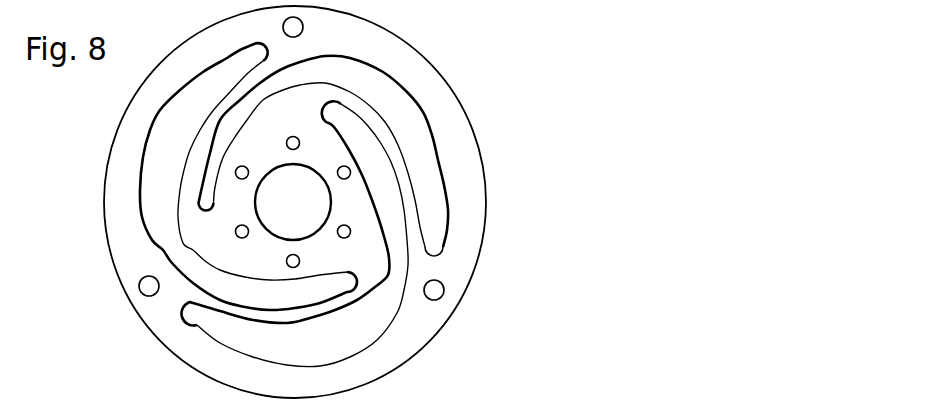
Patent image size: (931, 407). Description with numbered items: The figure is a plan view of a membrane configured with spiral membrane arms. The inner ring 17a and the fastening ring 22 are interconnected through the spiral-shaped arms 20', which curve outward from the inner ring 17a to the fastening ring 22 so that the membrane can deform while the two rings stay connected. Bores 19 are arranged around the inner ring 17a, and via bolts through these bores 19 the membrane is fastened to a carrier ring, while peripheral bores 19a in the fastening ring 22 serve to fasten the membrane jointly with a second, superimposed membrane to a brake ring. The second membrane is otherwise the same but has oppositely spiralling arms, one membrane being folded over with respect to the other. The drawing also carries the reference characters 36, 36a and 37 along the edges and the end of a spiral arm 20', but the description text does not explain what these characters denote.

The inner ring 17a is at (352, 194).
The bores 19 is at (301, 141).
The peripheral bores 19a is at (443, 294).
The spiral-shaped arms 20' is at (359, 205).
The fastening ring 22 is at (460, 231).
The spiral slot inner edge 36 is at (308, 97).
The spiral slot end 36a is at (428, 262).
The spiral slot outer edge 37 is at (347, 57).